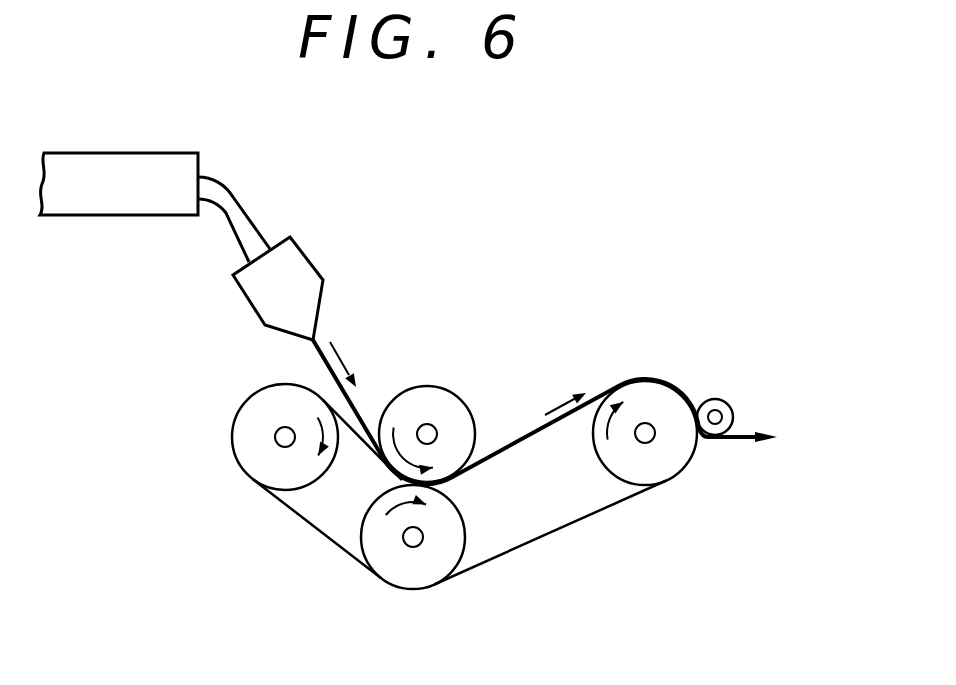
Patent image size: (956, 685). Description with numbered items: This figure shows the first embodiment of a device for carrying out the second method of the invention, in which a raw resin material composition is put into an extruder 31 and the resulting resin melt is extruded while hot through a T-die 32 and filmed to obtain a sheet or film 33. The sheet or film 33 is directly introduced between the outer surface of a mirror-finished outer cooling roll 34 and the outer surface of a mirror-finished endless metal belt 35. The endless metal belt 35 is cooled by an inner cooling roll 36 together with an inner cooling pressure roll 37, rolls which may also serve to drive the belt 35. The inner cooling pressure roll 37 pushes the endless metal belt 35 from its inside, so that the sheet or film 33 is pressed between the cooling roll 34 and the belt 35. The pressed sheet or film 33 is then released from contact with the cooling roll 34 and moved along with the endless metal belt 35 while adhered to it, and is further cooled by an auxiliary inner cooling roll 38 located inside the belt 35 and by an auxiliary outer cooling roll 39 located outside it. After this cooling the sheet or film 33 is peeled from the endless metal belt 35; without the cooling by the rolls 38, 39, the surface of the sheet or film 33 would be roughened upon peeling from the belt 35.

The extruder 31 is at (138, 154).
The T-die 32 is at (328, 262).
The sheet or film 33 is at (358, 407).
The outer cooling roll 34 is at (452, 398).
The endless metal belt 35 is at (570, 522).
The inner cooling roll 36 is at (238, 425).
The inner cooling pressure roll 37 is at (430, 577).
The auxiliary inner cooling roll 38 is at (645, 395).
The auxiliary outer cooling roll 39 is at (720, 398).